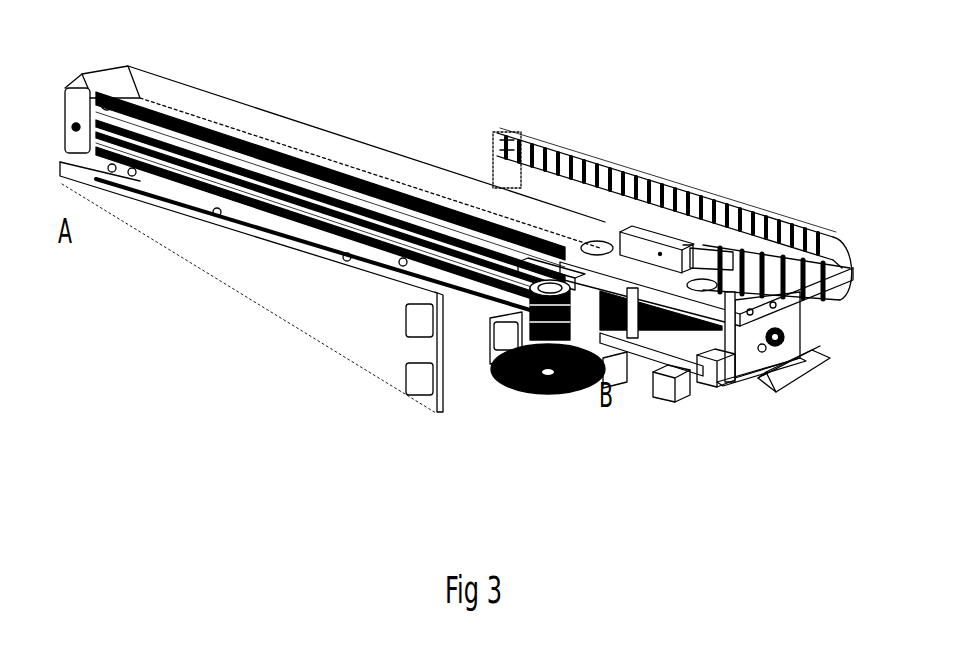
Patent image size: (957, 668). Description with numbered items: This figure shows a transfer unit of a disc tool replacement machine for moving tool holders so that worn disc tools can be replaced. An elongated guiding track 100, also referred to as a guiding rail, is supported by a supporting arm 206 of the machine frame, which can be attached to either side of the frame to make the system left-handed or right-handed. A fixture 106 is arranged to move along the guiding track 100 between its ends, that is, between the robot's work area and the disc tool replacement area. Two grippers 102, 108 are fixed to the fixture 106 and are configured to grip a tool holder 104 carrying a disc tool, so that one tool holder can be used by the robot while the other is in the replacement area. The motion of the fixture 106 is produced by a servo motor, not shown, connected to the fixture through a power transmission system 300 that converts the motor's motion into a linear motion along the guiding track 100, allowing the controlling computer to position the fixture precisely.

The guiding track 100 is at (197, 140).
The gripper 102 is at (580, 390).
The tool holder 104 is at (540, 258).
The fixture 106 is at (667, 246).
The gripper 108 is at (706, 378).
The supporting arm 206 is at (283, 292).
The power transmission system 300 is at (608, 163).